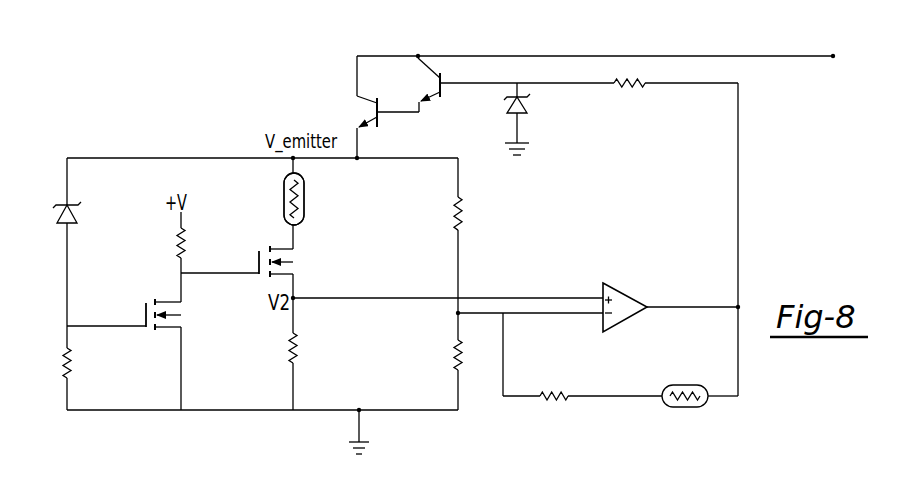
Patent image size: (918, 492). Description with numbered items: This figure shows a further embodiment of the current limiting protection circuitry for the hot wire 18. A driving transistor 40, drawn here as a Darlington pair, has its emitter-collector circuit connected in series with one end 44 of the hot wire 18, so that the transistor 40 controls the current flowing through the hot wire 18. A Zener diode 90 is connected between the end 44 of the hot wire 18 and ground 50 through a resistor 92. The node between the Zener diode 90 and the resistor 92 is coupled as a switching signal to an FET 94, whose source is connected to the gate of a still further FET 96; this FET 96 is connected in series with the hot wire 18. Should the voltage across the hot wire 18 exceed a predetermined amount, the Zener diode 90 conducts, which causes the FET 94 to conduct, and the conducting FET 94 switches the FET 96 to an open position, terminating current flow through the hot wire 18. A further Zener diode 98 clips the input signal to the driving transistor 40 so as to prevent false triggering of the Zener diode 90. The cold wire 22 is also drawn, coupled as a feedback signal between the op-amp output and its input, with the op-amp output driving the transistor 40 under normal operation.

The driving transistor 40 is at (418, 59).
The Zener diode 98 is at (528, 97).
The Zener diode 90 is at (67, 203).
The resistor 92 is at (64, 350).
The FET 96 is at (296, 263).
The FET 94 is at (182, 318).
The end of the hot wire 44 is at (304, 177).
The hot wire 18 is at (286, 196).
The cold wire 22 is at (680, 408).
The ground 50 is at (359, 457).